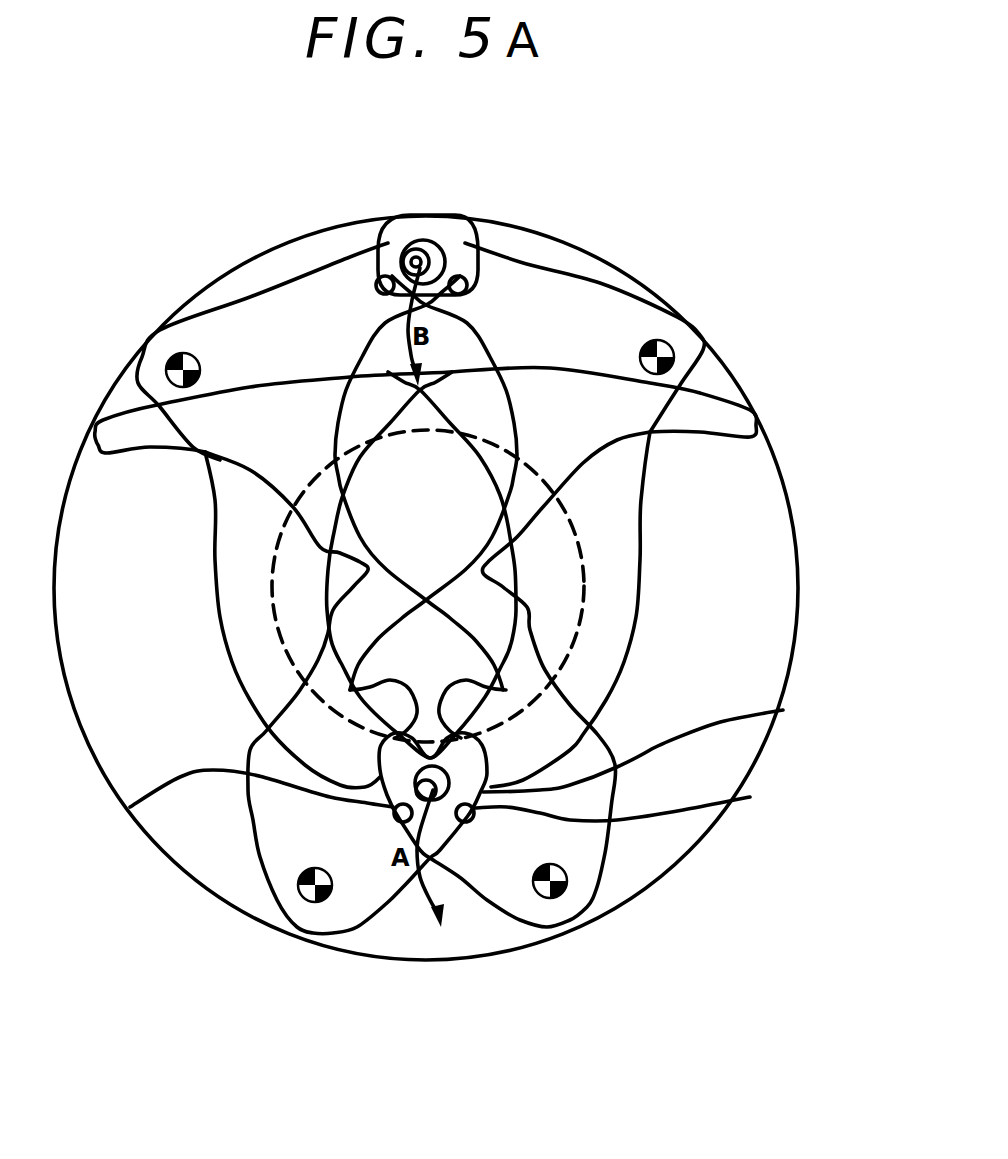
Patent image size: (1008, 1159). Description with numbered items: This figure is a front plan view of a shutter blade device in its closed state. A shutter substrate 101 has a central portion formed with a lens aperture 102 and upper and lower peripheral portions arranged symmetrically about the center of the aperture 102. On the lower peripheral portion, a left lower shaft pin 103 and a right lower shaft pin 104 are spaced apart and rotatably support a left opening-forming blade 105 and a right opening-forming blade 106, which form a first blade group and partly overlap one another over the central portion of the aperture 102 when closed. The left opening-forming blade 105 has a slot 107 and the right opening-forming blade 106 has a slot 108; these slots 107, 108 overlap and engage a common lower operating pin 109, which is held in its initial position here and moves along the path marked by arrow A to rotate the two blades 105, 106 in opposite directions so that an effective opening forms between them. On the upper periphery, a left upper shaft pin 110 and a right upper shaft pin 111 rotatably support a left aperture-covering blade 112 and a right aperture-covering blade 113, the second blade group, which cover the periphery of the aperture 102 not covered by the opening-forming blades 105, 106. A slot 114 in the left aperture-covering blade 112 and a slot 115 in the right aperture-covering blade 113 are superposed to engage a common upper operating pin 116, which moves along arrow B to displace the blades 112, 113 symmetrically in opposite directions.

The shutter substrate 101 is at (750, 468).
The lens aperture 102 is at (585, 557).
The left lower shaft pin 103 is at (322, 903).
The right lower shaft pin 104 is at (547, 900).
The left opening-forming blade 105 is at (277, 850).
The right opening-forming blade 106 is at (583, 903).
The slot 107 is at (130, 807).
The slot 108 is at (750, 798).
The lower operating pin 109 is at (783, 711).
The left upper shaft pin 110 is at (170, 352).
The right upper shaft pin 111 is at (670, 352).
The left aperture-covering blade 112 is at (266, 302).
The right aperture-covering blade 113 is at (560, 310).
The slot 114 is at (392, 258).
The slot 115 is at (466, 268).
The upper operating pin 116 is at (415, 258).